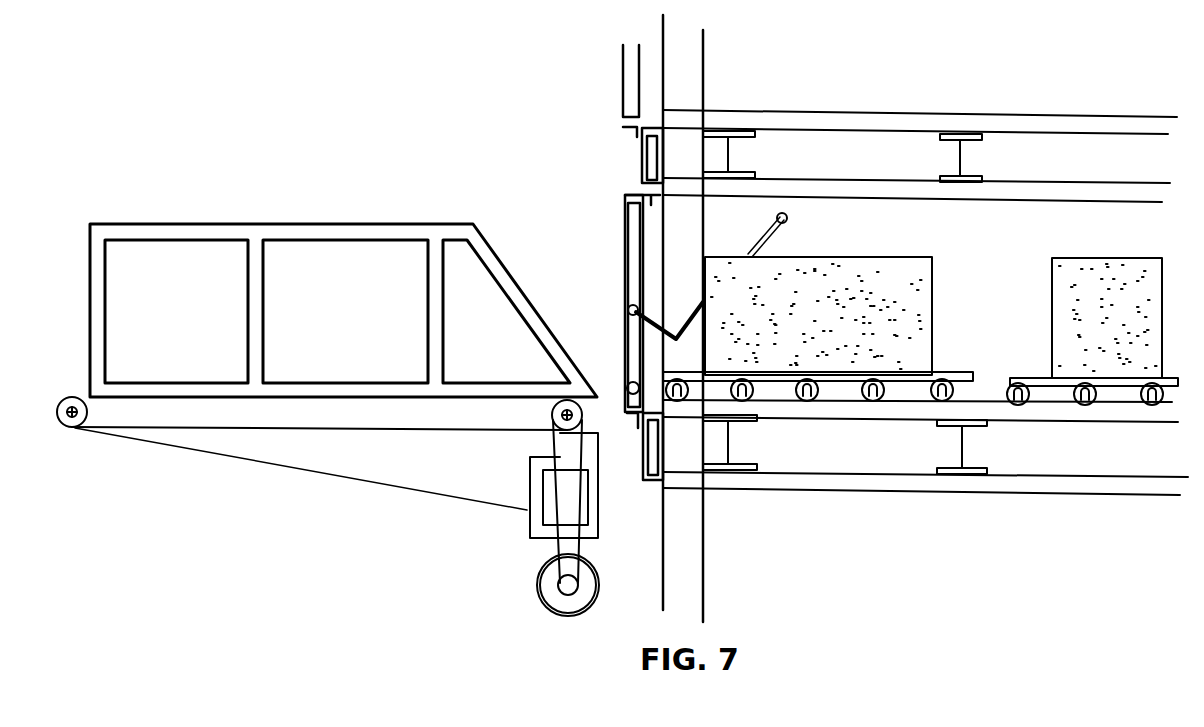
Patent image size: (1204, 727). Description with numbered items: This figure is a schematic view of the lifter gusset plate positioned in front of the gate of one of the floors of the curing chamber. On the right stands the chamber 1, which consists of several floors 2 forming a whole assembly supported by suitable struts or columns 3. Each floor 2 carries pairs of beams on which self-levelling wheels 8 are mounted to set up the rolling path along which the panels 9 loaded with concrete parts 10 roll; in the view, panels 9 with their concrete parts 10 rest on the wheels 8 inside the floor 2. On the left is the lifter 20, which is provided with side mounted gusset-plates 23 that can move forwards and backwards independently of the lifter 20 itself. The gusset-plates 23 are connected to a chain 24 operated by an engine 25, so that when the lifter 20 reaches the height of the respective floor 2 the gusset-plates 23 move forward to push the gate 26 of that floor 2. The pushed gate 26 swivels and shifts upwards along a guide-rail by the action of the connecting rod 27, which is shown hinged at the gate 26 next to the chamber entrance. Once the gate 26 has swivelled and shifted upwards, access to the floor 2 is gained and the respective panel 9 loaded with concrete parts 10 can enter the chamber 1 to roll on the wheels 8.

The chamber 1 is at (946, 74).
The floor 2 is at (1048, 228).
The strut 3 is at (690, 568).
The self-levelling wheel 8 is at (940, 392).
The panel 9 is at (778, 374).
The concrete part 10 is at (837, 270).
The lifter 20 is at (413, 470).
The gusset-plate 23 is at (256, 268).
The chain 24 is at (336, 424).
The engine 25 is at (548, 577).
The gate 26 is at (632, 84).
The connecting rod 27 is at (650, 325).